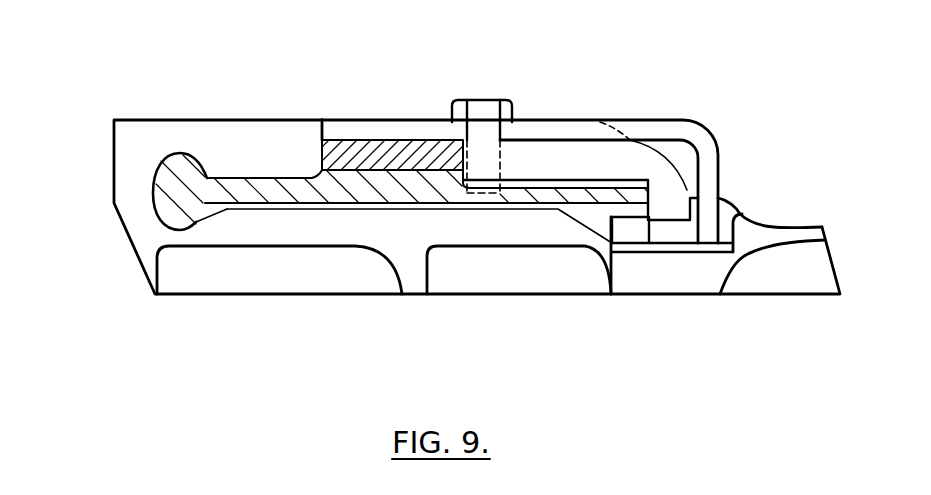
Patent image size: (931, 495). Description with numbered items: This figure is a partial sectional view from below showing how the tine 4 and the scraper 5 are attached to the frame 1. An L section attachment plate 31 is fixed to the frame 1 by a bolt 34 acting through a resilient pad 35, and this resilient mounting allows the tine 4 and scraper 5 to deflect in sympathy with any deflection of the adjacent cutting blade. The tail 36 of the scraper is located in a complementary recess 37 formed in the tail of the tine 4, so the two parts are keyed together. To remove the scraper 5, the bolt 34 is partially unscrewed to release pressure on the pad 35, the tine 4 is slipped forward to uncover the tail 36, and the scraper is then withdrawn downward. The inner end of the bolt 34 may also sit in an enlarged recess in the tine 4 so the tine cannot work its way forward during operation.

The frame 1 is at (135, 259).
The tine 4 is at (236, 178).
The scraper 5 is at (615, 254).
The L section attachment plate 31 is at (533, 122).
The bolt 34 is at (452, 101).
The resilient pad 35 is at (357, 150).
The tail 36 is at (633, 228).
The recess 37 is at (610, 238).